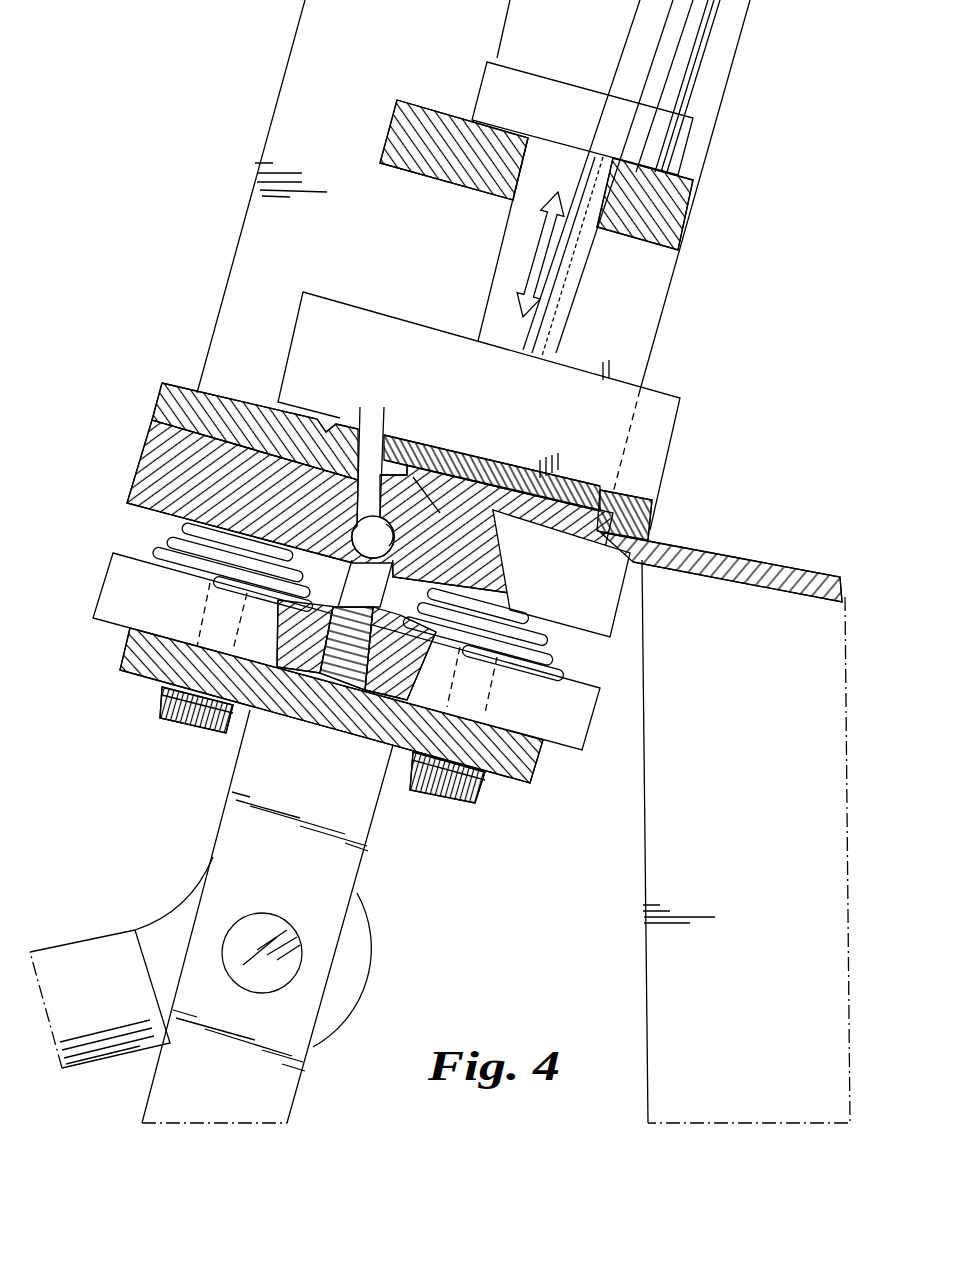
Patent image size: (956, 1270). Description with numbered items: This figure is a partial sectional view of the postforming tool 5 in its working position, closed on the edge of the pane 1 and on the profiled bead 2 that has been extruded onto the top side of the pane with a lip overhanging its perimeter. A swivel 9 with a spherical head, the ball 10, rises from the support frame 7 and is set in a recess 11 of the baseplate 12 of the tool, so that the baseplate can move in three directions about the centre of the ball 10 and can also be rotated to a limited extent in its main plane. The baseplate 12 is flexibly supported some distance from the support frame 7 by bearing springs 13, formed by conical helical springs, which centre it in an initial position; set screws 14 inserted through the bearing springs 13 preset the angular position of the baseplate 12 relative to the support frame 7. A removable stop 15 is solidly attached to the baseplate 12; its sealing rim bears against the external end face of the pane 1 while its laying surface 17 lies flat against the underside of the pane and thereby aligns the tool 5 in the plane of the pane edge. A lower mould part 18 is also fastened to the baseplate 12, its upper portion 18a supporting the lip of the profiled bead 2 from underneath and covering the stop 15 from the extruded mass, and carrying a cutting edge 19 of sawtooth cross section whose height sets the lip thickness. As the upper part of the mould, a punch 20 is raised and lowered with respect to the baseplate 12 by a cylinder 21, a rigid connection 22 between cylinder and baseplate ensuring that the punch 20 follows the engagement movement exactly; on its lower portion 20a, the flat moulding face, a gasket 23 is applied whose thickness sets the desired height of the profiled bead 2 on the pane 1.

The pane 1 is at (723, 548).
The profiled bead 2 is at (432, 445).
The tool 5 is at (107, 280).
The support frame 7 is at (347, 886).
The swivel 9 is at (357, 682).
The ball 10 is at (366, 538).
The recess 11 is at (358, 413).
The baseplate 12 is at (77, 483).
The bearing springs 13 is at (153, 543).
The set screws 14 is at (197, 733).
The stop 15 is at (628, 565).
The laying surface 17 is at (508, 540).
The lower mould part 18 is at (160, 401).
The upper portion of mould part 18a is at (257, 413).
The cutting edge 19 is at (333, 413).
The punch 20 is at (447, 345).
The lower portion of punch 20a is at (388, 428).
The cylinder 21 is at (566, 42).
The rigid connection 22 is at (650, 274).
The gasket 23 is at (650, 500).